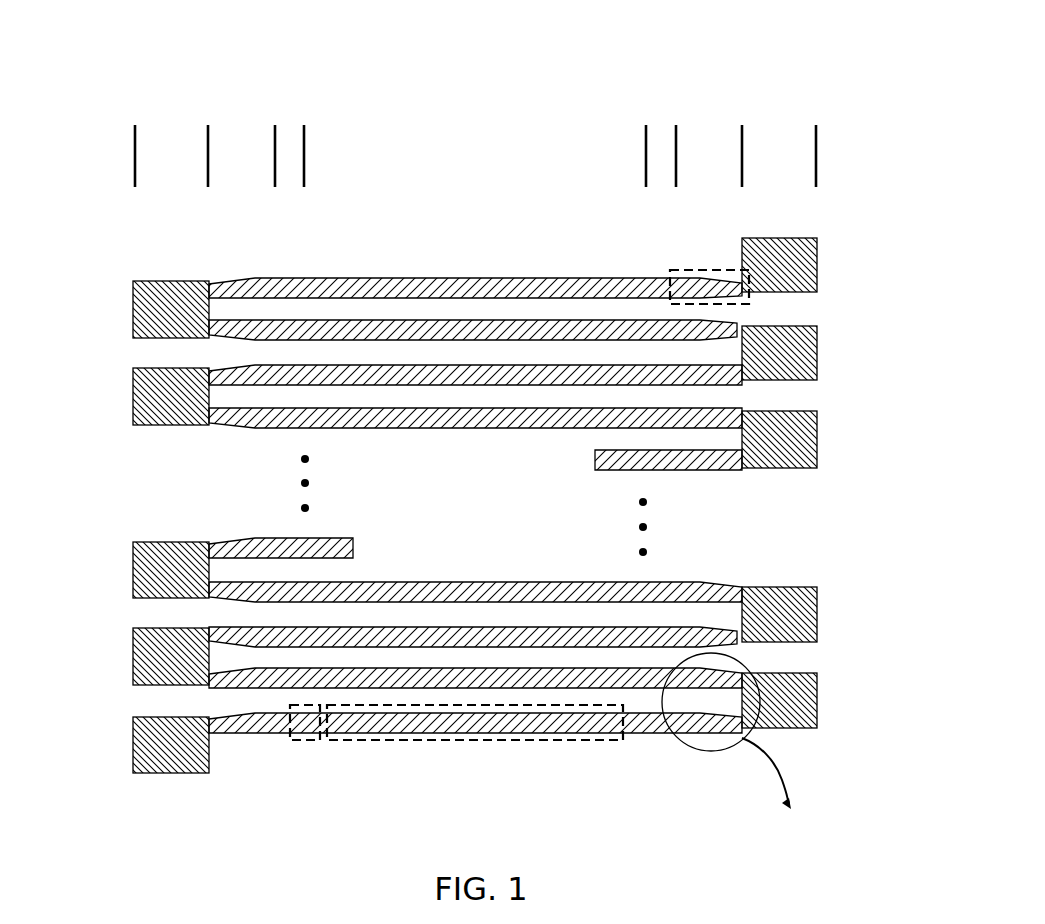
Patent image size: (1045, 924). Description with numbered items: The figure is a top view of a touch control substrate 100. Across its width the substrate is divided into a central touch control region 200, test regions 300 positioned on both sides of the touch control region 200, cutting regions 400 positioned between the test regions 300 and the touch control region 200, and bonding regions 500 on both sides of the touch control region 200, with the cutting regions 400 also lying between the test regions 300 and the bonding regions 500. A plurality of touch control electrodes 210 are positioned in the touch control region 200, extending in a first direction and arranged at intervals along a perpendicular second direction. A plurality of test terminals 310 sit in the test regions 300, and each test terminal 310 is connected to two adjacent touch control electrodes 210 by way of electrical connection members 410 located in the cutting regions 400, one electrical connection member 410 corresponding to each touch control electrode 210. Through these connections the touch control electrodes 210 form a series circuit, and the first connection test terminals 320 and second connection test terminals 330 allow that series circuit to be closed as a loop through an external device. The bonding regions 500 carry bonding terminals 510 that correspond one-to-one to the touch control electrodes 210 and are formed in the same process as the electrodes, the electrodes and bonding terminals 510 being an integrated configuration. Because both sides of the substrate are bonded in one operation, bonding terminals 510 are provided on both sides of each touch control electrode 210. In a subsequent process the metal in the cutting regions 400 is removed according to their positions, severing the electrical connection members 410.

The touch control substrate 100 is at (266, 53).
The touch control region 200 is at (306, 157).
The touch control electrodes 210 is at (473, 740).
The test regions 300 is at (206, 157).
The test terminals 310 is at (797, 440).
The first connection test terminals 320 is at (782, 255).
The second connection test terminals 330 is at (177, 745).
The cutting regions 400 is at (273, 157).
The electrical connection members 410 is at (748, 283).
The bonding regions 500 is at (302, 157).
The bonding terminals 510 is at (305, 740).